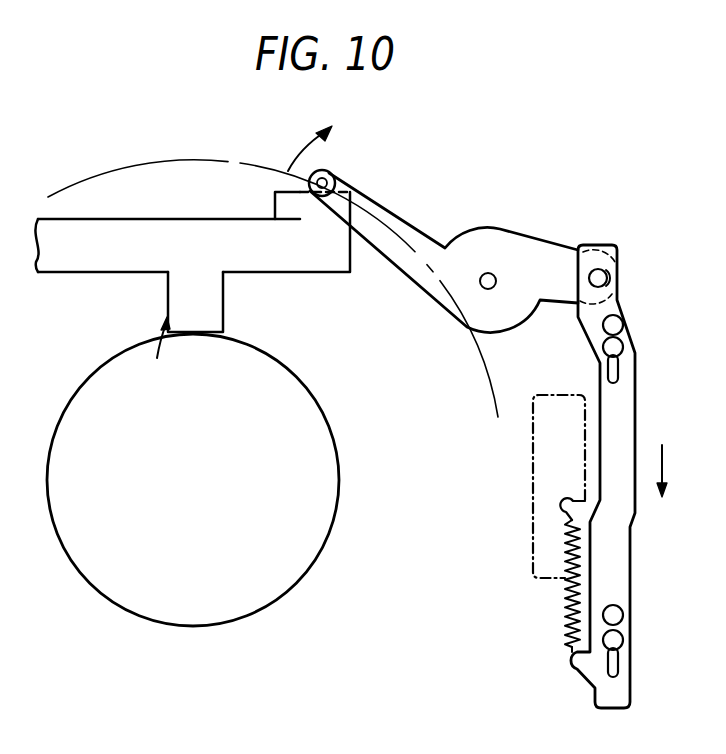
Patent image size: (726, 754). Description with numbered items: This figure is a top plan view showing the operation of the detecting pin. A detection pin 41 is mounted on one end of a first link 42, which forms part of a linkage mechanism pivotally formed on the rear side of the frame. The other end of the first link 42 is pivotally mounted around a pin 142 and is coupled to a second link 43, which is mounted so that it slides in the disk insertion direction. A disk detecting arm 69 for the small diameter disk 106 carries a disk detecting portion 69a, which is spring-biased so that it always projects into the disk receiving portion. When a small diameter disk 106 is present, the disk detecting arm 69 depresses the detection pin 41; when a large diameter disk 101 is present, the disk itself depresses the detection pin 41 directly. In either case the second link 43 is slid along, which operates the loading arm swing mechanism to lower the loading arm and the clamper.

The disk detecting arm 69 is at (88, 235).
The disk detecting portion 69a is at (208, 301).
The large diameter disk 101 is at (210, 160).
The detection pin 41 is at (330, 171).
The first link 42 is at (393, 223).
The pin 142 is at (490, 290).
The second link 43 is at (625, 437).
The small diameter disk 106 is at (312, 562).